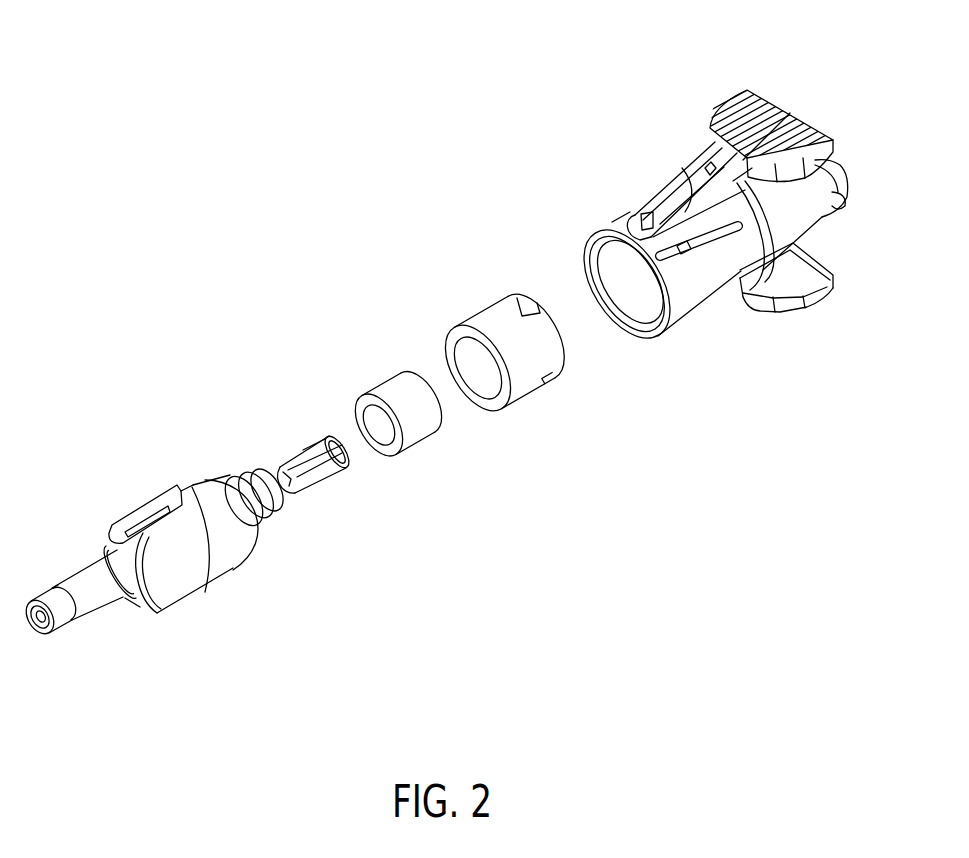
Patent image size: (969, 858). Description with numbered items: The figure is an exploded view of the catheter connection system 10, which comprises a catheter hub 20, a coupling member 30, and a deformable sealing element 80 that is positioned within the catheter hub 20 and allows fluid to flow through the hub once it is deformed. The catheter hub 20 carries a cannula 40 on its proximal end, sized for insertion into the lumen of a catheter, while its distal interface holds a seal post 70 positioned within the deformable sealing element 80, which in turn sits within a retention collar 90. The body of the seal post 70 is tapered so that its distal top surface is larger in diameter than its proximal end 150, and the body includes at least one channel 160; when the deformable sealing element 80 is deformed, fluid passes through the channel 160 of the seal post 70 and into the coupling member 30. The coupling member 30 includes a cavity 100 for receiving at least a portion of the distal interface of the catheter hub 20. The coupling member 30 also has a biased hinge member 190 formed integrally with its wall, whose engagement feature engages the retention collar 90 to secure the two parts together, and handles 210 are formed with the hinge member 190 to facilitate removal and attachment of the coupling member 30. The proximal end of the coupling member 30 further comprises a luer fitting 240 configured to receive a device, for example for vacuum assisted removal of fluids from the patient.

The catheter connection system 10 is at (333, 218).
The catheter hub 20 is at (198, 553).
The coupling member 30 is at (684, 295).
The cannula 40 is at (70, 612).
The seal post 70 is at (316, 480).
The deformable sealing element 80 is at (413, 437).
The retention collar 90 is at (527, 390).
The cavity 100 is at (721, 205).
The proximal end of seal post 150 is at (287, 461).
The channel 160 is at (307, 479).
The biased hinge member 190 is at (682, 168).
The handles 210 is at (728, 106).
The luer fitting 240 is at (845, 197).